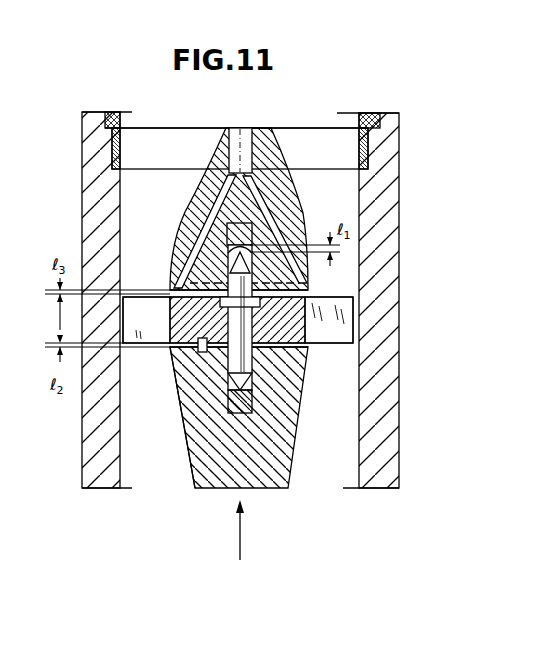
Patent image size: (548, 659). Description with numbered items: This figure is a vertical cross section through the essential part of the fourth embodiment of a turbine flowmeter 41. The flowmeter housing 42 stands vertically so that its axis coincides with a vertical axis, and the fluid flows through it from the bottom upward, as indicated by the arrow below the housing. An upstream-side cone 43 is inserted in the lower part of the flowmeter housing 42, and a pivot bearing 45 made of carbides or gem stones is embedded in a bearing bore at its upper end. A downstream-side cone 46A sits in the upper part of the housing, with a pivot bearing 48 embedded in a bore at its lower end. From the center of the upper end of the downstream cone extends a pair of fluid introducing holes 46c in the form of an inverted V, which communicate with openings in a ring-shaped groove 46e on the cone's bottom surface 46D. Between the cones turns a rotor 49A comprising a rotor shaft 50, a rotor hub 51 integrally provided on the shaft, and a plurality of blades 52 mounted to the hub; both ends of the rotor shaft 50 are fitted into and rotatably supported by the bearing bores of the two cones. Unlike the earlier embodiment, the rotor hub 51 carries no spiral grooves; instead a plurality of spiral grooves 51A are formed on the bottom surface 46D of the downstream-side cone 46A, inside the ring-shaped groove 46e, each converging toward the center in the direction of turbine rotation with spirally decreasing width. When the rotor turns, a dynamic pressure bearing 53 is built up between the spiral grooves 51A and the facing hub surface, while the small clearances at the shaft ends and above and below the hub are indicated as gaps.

The turbine flowmeter 41 is at (290, 110).
The flowmeter housing 42 is at (395, 136).
The upstream-side cone 43 is at (303, 447).
The pivot bearing 45 is at (242, 413).
The downstream-side cone 46A is at (306, 209).
The fluid introducing holes 46c is at (196, 184).
The bottom surface 46D is at (171, 346).
The ring-shaped groove 46e is at (170, 288).
The pivot bearing 48 is at (226, 226).
The rotor 49A is at (322, 290).
The rotor shaft 50 is at (225, 387).
The rotor hub 51 is at (292, 367).
The spiral grooves 51A is at (178, 378).
The blades 52 is at (330, 338).
The dynamic pressure bearing 53 is at (146, 320).